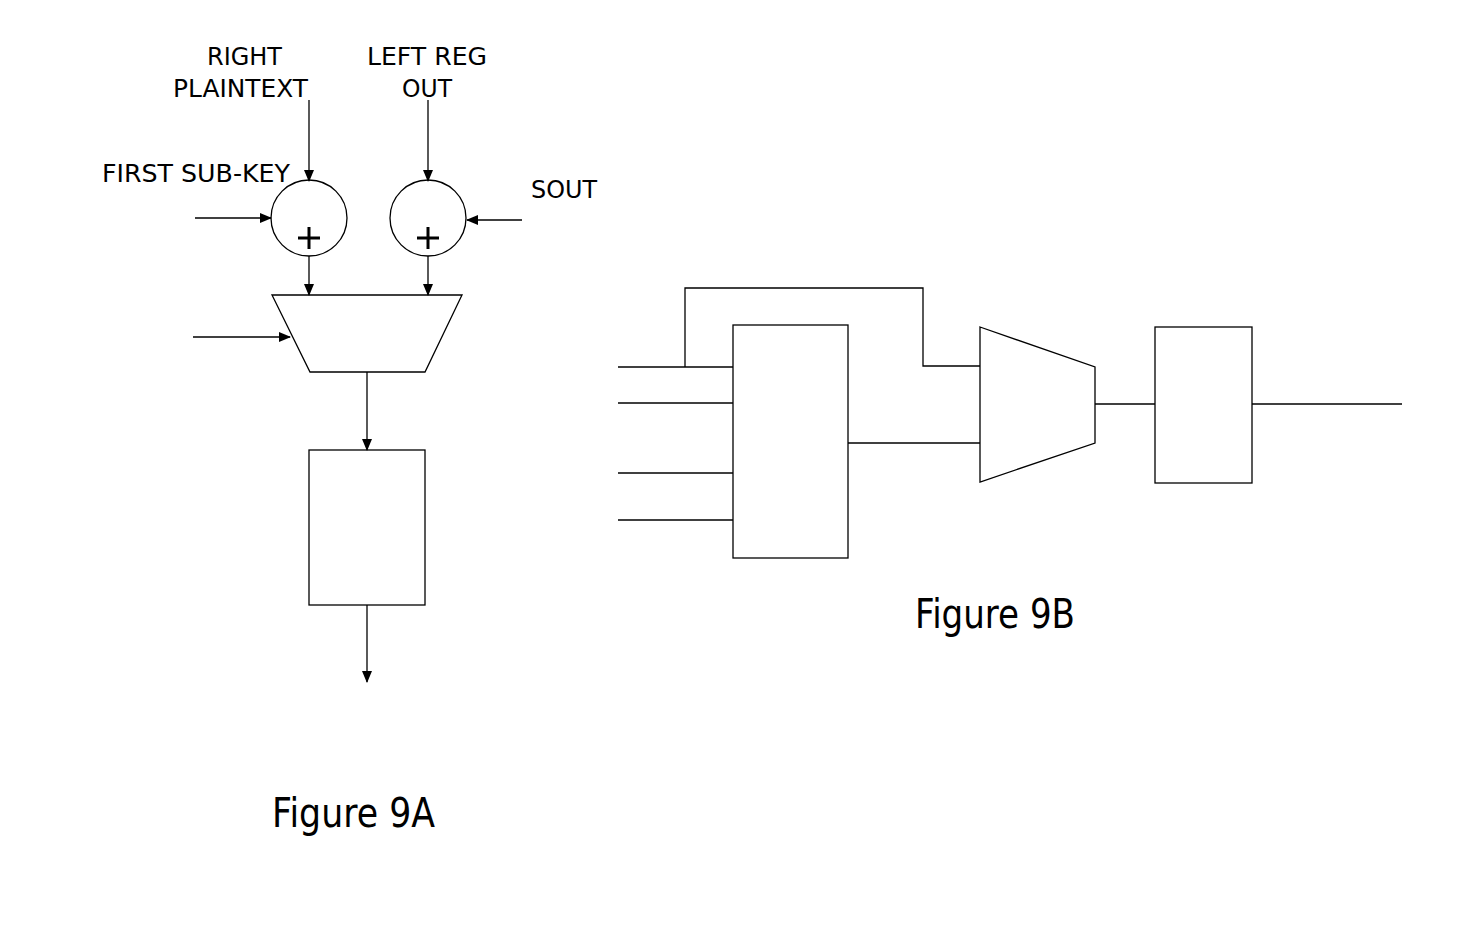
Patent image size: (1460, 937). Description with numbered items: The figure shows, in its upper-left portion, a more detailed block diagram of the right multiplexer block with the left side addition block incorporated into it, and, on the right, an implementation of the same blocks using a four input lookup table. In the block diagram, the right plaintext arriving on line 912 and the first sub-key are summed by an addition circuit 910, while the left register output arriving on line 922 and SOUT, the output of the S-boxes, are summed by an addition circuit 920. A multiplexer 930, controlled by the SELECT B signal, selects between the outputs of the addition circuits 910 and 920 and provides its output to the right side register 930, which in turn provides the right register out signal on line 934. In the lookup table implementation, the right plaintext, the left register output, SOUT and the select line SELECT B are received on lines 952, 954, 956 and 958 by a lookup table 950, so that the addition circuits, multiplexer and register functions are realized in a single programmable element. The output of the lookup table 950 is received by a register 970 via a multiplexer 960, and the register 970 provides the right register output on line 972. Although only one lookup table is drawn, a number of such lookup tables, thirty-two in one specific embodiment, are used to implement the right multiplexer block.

In FIG. 9A, the addition circuit 910 is at (271, 218).
In FIG. 9A, the right plaintext input line 912 is at (282, 140).
In FIG. 9A, the addition circuit 920 is at (456, 218).
In FIG. 9A, the left register out input line 922 is at (459, 140).
In FIG. 9A, the multiplexer and register 930 is at (367, 430).
In FIG. 9A, the right register out line 934 is at (306, 523).
In FIG. 9B, the lookup table 950 is at (790, 441).
In FIG. 9B, the right plaintext input line 952 is at (605, 357).
In FIG. 9B, the left register output input line 954 is at (580, 415).
In FIG. 9B, the SOUT input line 956 is at (623, 485).
In FIG. 9B, the select line input 958 is at (607, 531).
In FIG. 9B, the multiplexer 960 is at (890, 385).
In FIG. 9B, the register 970 is at (1173, 405).
In FIG. 9B, the right register output line 972 is at (1353, 407).